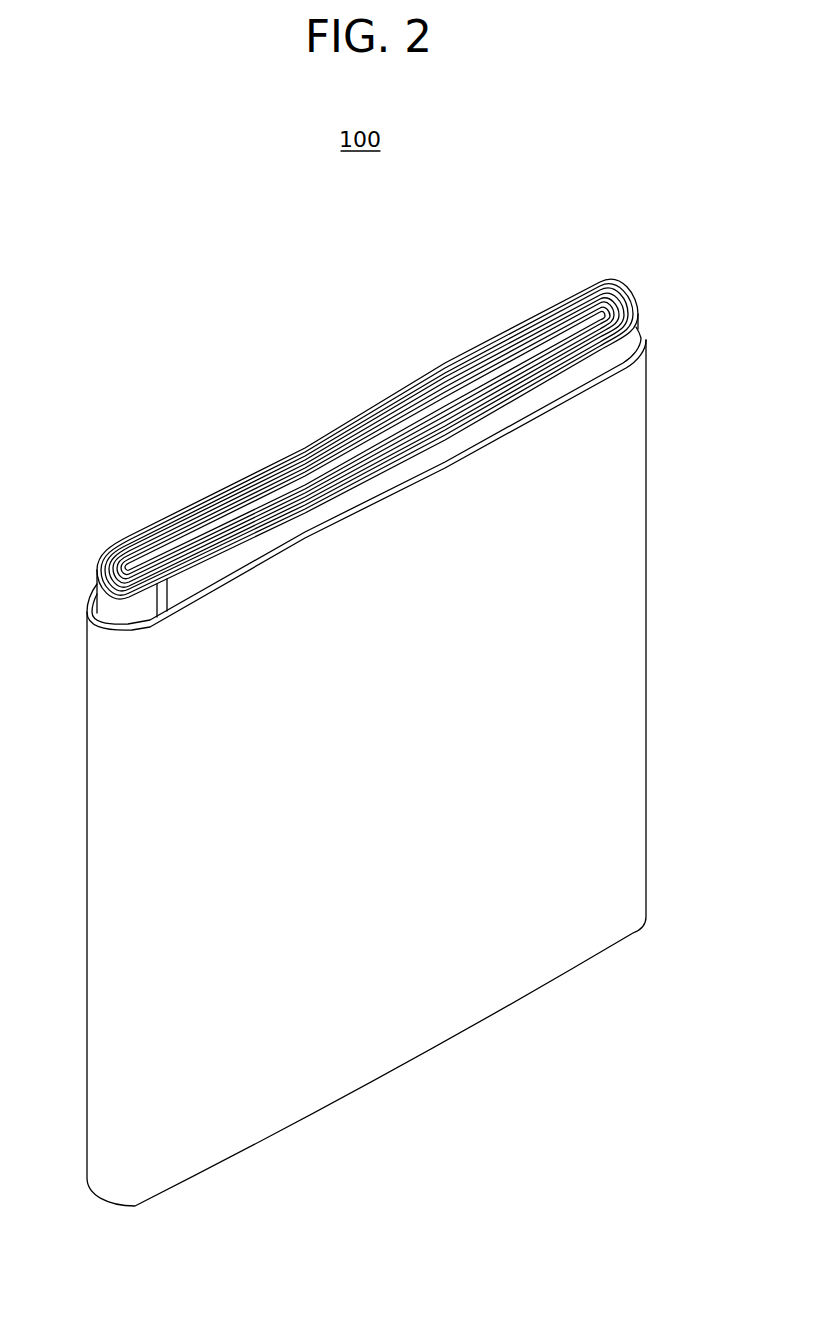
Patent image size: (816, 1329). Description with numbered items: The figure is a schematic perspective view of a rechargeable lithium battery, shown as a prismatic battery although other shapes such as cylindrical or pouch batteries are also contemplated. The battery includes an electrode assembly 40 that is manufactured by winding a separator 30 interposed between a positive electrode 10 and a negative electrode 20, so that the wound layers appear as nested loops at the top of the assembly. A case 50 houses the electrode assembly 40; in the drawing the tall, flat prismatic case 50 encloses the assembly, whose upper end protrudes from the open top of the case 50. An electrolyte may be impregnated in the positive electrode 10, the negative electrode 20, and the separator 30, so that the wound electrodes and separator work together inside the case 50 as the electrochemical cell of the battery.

The positive electrode 10 is at (636, 304).
The negative electrode 20 is at (596, 299).
The separator 30 is at (623, 293).
The electrode assembly 40 is at (387, 417).
The case 50 is at (631, 609).